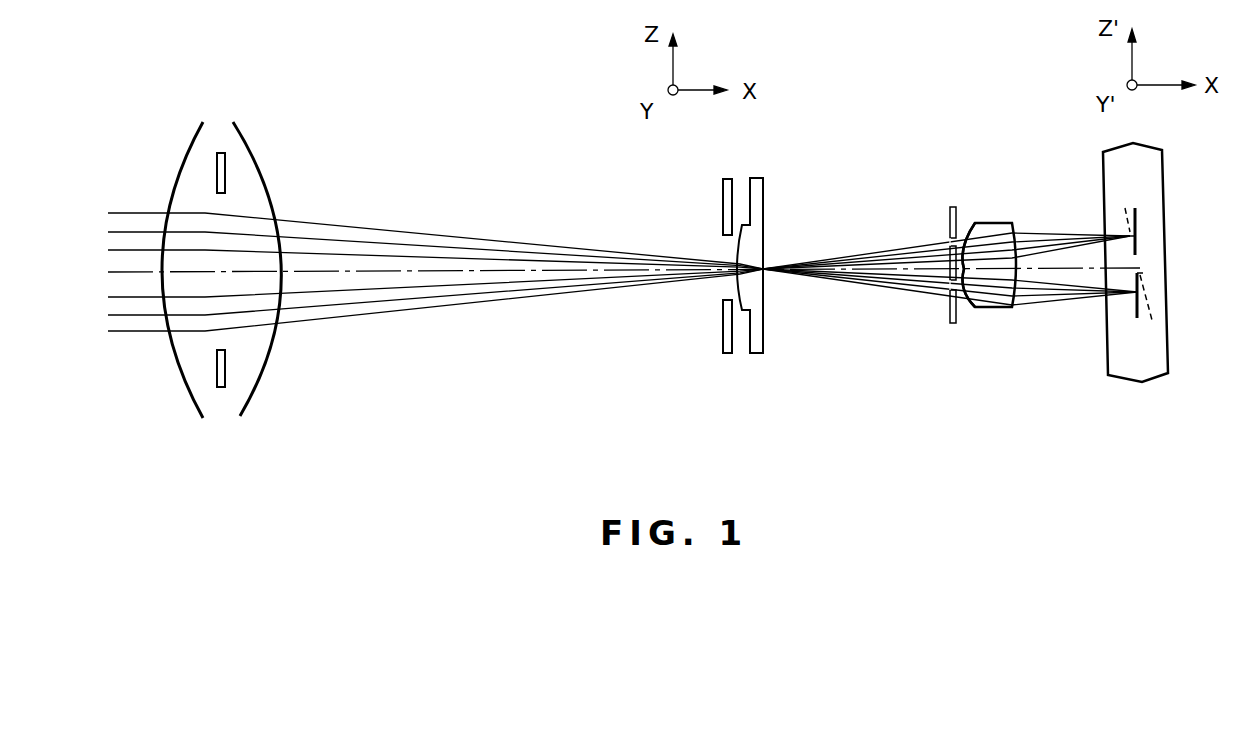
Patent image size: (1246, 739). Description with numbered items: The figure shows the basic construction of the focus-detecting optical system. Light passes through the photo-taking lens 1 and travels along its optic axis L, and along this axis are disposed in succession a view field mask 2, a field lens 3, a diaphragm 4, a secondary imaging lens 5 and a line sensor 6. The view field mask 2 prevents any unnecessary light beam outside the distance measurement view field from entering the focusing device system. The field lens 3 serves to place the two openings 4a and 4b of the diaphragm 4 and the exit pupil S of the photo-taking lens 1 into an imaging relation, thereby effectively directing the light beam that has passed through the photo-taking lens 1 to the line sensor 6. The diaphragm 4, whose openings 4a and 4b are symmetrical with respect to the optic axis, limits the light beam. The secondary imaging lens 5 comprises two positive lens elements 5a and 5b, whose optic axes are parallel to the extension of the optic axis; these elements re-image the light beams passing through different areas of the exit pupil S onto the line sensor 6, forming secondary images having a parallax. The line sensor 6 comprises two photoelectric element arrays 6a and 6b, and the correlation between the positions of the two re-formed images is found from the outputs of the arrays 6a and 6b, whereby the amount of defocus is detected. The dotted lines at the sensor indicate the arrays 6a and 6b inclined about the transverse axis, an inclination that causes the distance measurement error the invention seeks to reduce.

The photo-taking lens 1 is at (243, 142).
The exit pupil S is at (222, 390).
The optic axis L is at (465, 265).
The view field mask 2 is at (728, 355).
The field lens 3 is at (757, 355).
The diaphragm 4 is at (952, 328).
The opening 4a is at (948, 241).
The opening 4b is at (948, 287).
The secondary imaging lens 5 is at (1008, 310).
The positive lens element 5a is at (972, 222).
The positive lens element 5b is at (968, 310).
The line sensor 6 is at (1150, 383).
The photoelectric element array 6a is at (1137, 218).
The photoelectric element array 6b is at (1142, 305).